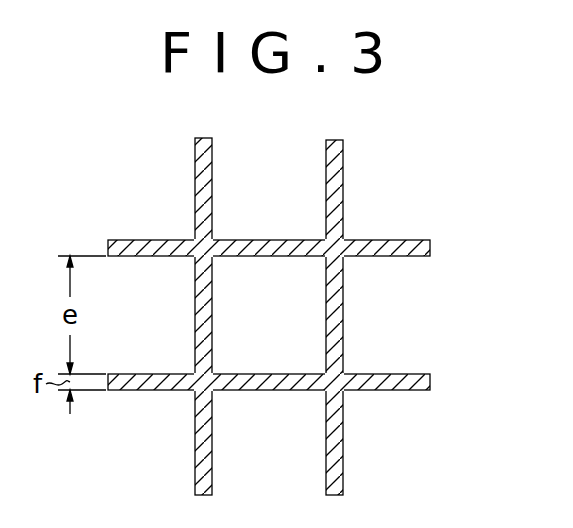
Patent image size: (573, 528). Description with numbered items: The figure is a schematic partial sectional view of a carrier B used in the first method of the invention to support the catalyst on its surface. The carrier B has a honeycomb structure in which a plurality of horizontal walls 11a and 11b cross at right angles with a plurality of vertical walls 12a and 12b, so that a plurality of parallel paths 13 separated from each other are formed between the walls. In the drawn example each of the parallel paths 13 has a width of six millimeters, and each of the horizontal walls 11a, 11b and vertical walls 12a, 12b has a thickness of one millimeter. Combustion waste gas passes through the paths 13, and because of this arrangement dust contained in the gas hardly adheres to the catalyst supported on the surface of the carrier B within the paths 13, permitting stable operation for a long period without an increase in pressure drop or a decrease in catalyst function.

The carrier B is at (302, 301).
The horizontal wall 11a is at (417, 240).
The horizontal wall 11b is at (410, 374).
The vertical wall 12a is at (197, 162).
The vertical wall 12b is at (327, 170).
The parallel paths 13 is at (228, 198).